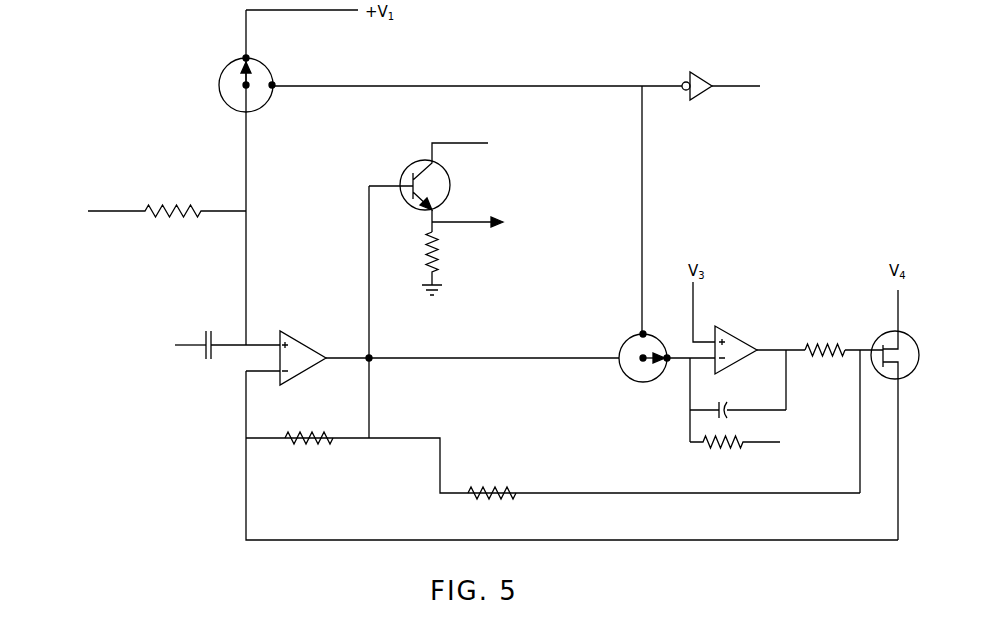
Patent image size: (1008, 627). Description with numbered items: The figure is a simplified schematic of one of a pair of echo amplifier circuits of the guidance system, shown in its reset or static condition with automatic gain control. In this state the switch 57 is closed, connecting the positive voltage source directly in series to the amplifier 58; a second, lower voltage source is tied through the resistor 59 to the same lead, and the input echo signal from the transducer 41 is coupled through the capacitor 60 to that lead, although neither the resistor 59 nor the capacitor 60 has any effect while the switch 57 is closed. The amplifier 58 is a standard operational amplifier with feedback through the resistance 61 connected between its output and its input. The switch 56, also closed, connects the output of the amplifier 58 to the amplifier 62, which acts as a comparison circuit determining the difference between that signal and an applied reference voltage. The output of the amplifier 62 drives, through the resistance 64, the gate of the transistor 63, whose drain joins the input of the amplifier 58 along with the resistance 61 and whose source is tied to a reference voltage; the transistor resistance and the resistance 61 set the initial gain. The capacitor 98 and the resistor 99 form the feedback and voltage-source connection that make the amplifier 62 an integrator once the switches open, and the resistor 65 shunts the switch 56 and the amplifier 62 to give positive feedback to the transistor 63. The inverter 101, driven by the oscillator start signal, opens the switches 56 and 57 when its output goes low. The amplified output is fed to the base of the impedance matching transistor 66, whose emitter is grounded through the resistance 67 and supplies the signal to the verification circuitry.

The transducer 41 is at (113, 343).
The switch 56 is at (628, 382).
The switch 57 is at (222, 68).
The amplifier 58 is at (305, 350).
The resistor 59 is at (172, 205).
The capacitor 60 is at (210, 328).
The resistance 61 is at (310, 445).
The amplifier 62 is at (738, 343).
The transistor 63 is at (906, 378).
The resistance 64 is at (828, 346).
The resistor 65 is at (492, 490).
The impedance matching transistor 66 is at (410, 168).
The resistance 67 is at (425, 250).
The capacitor 98 is at (722, 408).
The resistor 99 is at (725, 448).
The inverter 101 is at (700, 78).